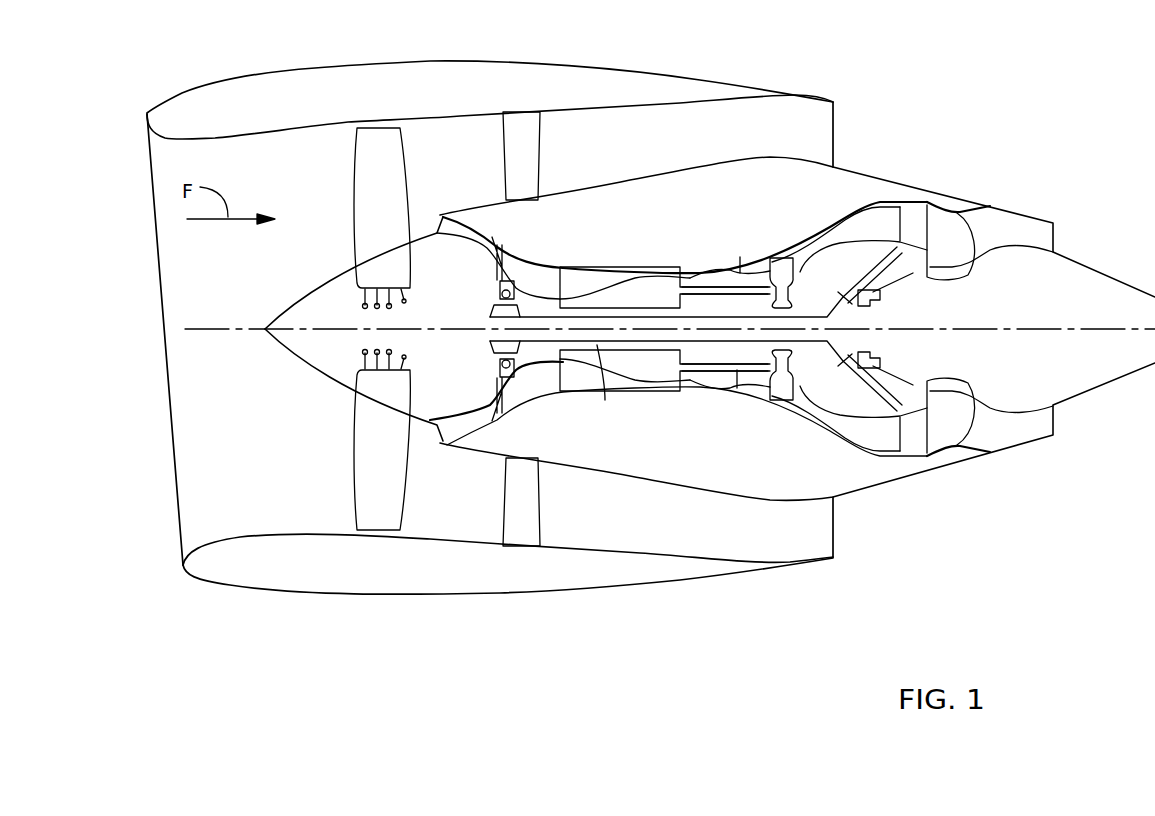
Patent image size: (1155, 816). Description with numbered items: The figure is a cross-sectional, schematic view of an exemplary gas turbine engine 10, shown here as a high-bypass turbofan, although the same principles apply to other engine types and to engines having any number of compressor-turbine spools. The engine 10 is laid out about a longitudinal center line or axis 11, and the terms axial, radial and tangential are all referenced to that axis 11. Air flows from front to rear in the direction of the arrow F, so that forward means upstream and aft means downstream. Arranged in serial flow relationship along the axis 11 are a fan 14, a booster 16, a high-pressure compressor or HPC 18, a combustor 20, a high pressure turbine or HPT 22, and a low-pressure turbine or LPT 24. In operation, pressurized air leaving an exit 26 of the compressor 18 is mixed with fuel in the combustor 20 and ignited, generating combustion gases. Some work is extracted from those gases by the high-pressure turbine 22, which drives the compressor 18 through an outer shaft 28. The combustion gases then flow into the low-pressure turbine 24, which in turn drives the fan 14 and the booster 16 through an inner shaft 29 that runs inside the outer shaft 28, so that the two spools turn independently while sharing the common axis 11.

The gas turbine engine 10 is at (826, 62).
The longitudinal center line or axis 11 is at (205, 329).
The fan 14 is at (378, 192).
The booster 16 is at (480, 227).
The high-pressure compressor 18 is at (580, 275).
The combustor 20 is at (740, 270).
The high pressure turbine 22 is at (775, 410).
The low-pressure turbine 24 is at (863, 222).
The exit of the compressor 26 is at (680, 380).
The outer shaft 28 is at (737, 372).
The inner shaft 29 is at (605, 400).